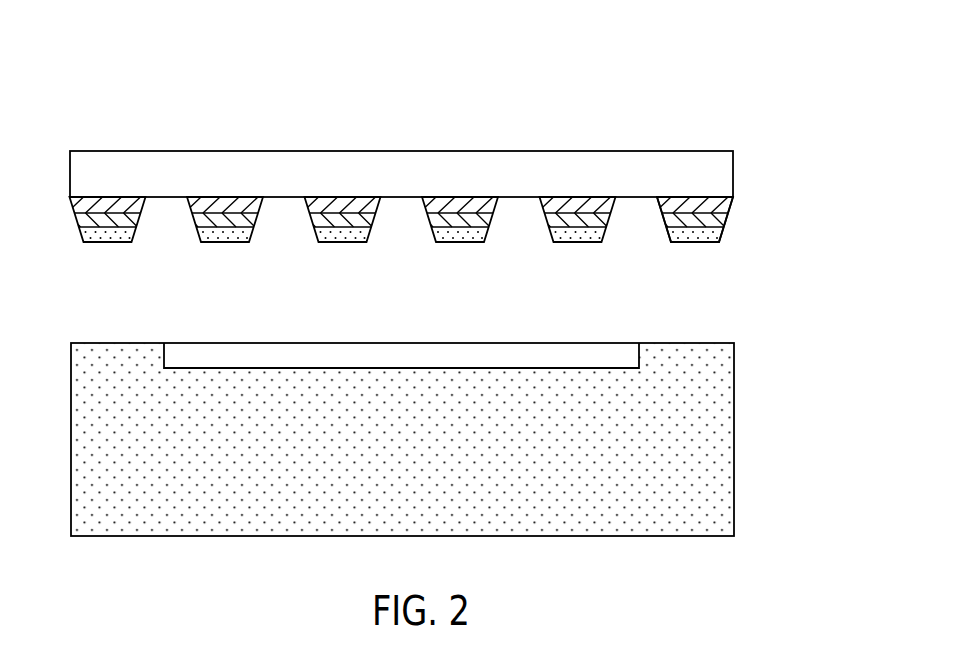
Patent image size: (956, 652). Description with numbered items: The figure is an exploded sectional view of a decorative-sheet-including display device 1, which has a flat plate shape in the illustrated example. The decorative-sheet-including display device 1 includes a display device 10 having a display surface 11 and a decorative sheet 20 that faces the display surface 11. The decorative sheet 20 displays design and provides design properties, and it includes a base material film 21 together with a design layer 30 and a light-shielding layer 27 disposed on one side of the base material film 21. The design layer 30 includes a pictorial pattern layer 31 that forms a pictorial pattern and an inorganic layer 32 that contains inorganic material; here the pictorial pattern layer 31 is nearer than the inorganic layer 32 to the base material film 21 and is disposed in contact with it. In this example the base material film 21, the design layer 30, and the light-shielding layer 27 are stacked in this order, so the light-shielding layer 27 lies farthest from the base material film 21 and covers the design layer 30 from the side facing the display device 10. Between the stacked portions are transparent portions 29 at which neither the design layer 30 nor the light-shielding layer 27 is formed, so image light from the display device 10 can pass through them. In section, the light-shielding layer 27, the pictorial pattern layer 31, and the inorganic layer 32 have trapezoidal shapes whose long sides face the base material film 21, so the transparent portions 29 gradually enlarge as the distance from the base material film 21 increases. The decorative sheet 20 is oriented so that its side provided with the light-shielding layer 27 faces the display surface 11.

The decorative-sheet-including display device 1 is at (95, 92).
The display device 10 is at (439, 408).
The display surface 11 is at (560, 343).
The decorative sheet 20 is at (481, 178).
The base material film 21 is at (734, 160).
The light-shielding layer 27 is at (724, 253).
The transparent portions 29 is at (520, 220).
The design layer 30 is at (456, 231).
The pictorial pattern layer 31 is at (728, 208).
The inorganic layer 32 is at (723, 222).